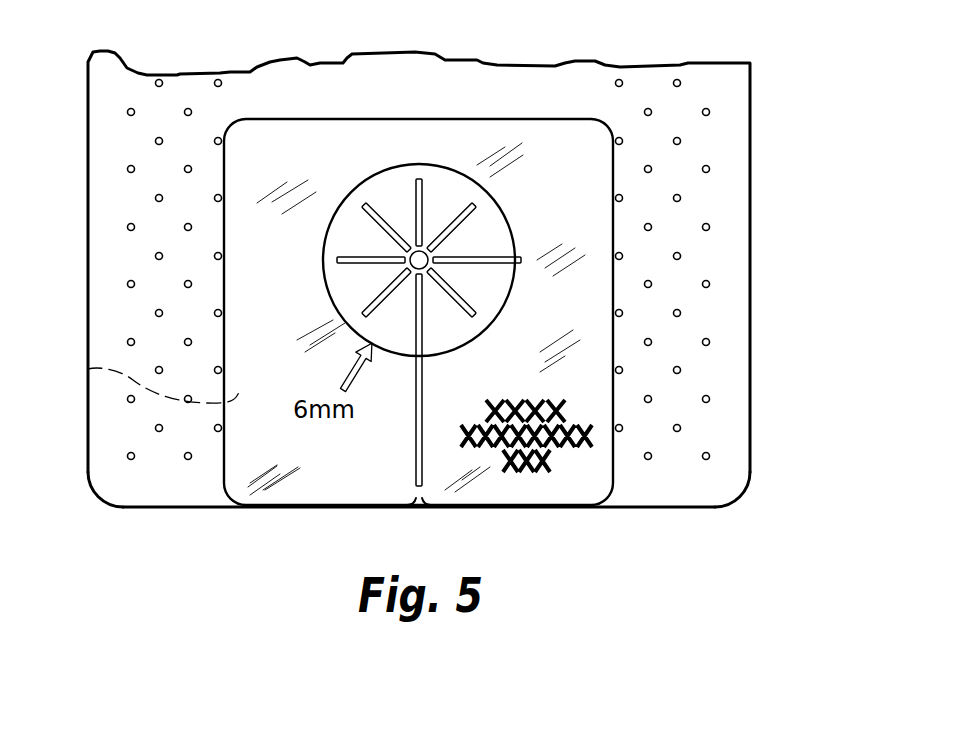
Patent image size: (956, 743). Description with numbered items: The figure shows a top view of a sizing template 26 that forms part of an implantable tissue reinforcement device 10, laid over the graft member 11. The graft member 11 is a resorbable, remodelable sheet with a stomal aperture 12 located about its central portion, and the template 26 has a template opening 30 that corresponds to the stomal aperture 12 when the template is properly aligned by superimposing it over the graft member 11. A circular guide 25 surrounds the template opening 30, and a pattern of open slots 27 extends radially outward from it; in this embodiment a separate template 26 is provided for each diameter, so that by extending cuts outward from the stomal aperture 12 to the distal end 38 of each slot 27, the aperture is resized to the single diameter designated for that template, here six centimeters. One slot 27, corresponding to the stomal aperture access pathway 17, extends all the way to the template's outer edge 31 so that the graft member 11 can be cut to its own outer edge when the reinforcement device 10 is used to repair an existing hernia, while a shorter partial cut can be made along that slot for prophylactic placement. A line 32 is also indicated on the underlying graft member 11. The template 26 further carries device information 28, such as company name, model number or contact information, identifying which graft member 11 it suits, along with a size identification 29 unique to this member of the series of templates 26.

The implantable tissue reinforcement device 10 is at (628, 102).
The graft member 11 is at (703, 197).
The stomal aperture 12 is at (428, 264).
The stomal aperture access pathway 17 is at (428, 433).
The circular target ring 25 is at (372, 170).
The template 26 is at (582, 290).
The open slots 27 is at (470, 222).
The device information 28 is at (572, 402).
The size identification 29 is at (308, 432).
The template opening 30 is at (425, 248).
The outer edge 31 is at (355, 508).
The fold line 32 is at (88, 369).
The distal end 38 is at (313, 260).